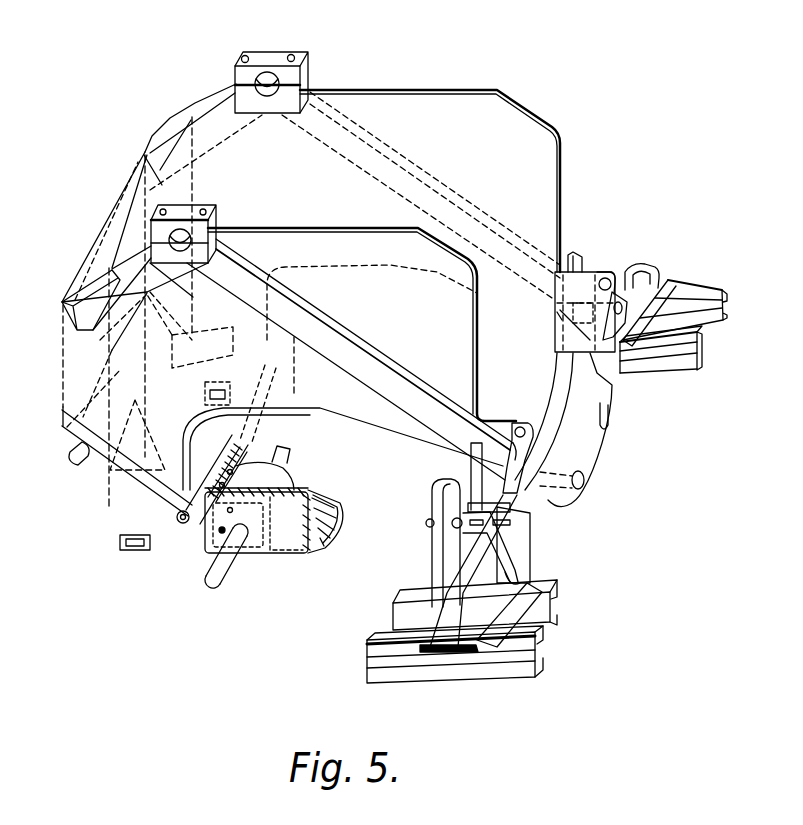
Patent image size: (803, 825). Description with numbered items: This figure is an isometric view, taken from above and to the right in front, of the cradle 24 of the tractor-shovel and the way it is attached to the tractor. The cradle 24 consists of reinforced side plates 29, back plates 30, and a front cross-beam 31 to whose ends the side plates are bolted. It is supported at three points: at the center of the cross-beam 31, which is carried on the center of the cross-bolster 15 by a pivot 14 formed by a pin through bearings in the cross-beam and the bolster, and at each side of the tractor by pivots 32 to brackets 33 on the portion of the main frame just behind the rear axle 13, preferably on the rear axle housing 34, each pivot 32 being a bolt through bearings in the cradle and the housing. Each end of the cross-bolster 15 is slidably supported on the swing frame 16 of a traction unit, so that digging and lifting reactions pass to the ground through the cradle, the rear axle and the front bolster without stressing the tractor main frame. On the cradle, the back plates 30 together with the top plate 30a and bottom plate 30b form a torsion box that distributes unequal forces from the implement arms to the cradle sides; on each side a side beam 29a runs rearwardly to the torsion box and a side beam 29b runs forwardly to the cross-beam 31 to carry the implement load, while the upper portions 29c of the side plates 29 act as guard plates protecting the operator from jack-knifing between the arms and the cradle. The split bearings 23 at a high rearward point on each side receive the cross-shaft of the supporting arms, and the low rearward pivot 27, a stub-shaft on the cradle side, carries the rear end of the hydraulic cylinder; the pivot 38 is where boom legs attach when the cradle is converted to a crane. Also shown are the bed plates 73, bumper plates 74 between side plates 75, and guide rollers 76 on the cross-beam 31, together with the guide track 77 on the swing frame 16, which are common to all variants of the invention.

The rear axle 13 is at (217, 582).
The pivot 14 is at (585, 481).
The cross-bolster 15 is at (478, 563).
The swing frame 16 is at (700, 290).
The split bearings 23 is at (292, 72).
The cradle 24 is at (107, 221).
The pivot 27 is at (70, 458).
The side plates 29 is at (303, 204).
The side beam 29a is at (200, 103).
The side beam 29b is at (484, 213).
The upper portions of side plates 29c is at (455, 117).
The back plates 30 is at (109, 378).
The top plate 30a is at (135, 198).
The bottom plate 30b is at (143, 387).
The front cross-beam 31 is at (571, 503).
The pivot 32 is at (183, 524).
The brackets 33 is at (150, 552).
The rear axle housing 34 is at (273, 521).
The pivot 38 is at (520, 425).
The bed plates 73 is at (610, 385).
The bumper plates 74 is at (520, 583).
The side plates 75 is at (470, 535).
The guide rollers 76 is at (426, 524).
The guide track 77 is at (432, 492).